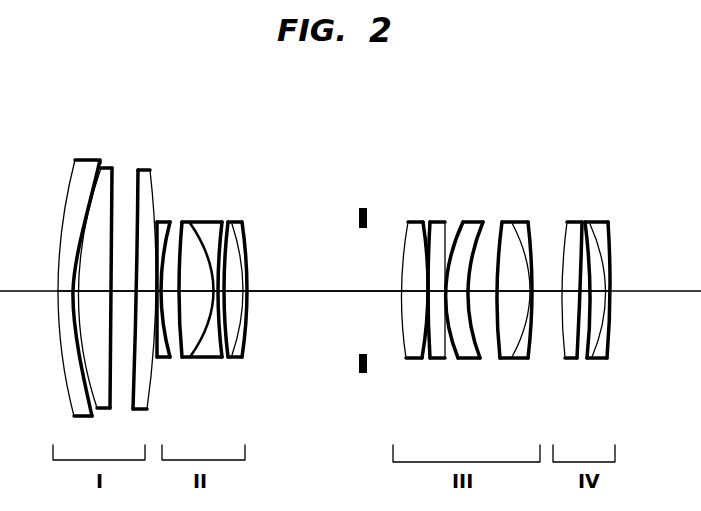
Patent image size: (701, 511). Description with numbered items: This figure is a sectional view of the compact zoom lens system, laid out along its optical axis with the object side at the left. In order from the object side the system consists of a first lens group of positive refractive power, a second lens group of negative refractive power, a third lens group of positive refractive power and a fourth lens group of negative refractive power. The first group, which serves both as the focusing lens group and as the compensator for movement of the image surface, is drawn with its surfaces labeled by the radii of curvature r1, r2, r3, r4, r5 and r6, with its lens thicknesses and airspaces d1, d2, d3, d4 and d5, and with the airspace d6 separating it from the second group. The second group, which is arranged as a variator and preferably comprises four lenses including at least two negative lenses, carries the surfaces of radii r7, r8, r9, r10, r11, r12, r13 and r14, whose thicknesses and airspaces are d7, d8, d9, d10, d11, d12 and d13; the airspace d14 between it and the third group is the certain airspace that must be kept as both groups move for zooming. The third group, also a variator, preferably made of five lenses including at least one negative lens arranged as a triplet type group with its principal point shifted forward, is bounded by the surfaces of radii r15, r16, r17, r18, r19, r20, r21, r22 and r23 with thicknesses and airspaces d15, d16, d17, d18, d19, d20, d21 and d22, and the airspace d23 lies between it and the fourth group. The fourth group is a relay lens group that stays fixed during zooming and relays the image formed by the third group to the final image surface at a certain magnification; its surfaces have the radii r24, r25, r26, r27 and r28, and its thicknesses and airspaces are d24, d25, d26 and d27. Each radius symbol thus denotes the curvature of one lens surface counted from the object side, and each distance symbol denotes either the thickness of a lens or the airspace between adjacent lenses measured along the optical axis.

The radius of curvature of first lens surface r1 is at (75, 172).
The radius of curvature of second lens surface r2 is at (96, 178).
The radius of curvature of third lens surface r3 is at (104, 176).
The radius of curvature of fourth lens surface r4 is at (113, 200).
The radius of curvature of fifth lens surface r5 is at (140, 195).
The radius of curvature of sixth lens surface r6 is at (156, 212).
The radius of curvature of seventh lens surface r7 is at (158, 230).
The radius of curvature of eighth lens surface r8 is at (172, 232).
The radius of curvature of ninth lens surface r9 is at (188, 236).
The radius of curvature of tenth lens surface r10 is at (212, 252).
The radius of curvature of eleventh lens surface r11 is at (222, 240).
The radius of curvature of twelfth lens surface r12 is at (228, 250).
The radius of curvature of thirteenth lens surface r13 is at (240, 262).
The radius of curvature of fourteenth lens surface r14 is at (247, 282).
The radius of curvature of fifteenth lens surface r15 is at (405, 238).
The radius of curvature of sixteenth lens surface r16 is at (423, 236).
The radius of curvature of seventeenth lens surface r17 is at (429, 225).
The radius of curvature of eighteenth lens surface r18 is at (447, 238).
The radius of curvature of nineteenth lens surface r19 is at (458, 242).
The radius of curvature of twentieth lens surface r20 is at (480, 242).
The radius of curvature of twenty-first lens surface r21 is at (500, 235).
The radius of curvature of twenty-second lens surface r22 is at (522, 258).
The radius of curvature of twenty-third lens surface r23 is at (532, 252).
The radius of curvature of twenty-fourth lens surface r24 is at (565, 242).
The radius of curvature of twenty-fifth lens surface r25 is at (582, 247).
The radius of curvature of twenty-sixth lens surface r26 is at (590, 252).
The radius of curvature of twenty-seventh lens surface r27 is at (602, 267).
The radius of curvature of twenty-eighth lens surface r28 is at (611, 291).
The first lens thickness or airspace d1 is at (67, 296).
The second lens thickness or airspace d2 is at (76, 298).
The third lens thickness or airspace d3 is at (98, 300).
The fourth lens thickness or airspace d4 is at (119, 297).
The fifth lens thickness or airspace d5 is at (136, 302).
The sixth lens thickness or airspace d6 is at (157, 305).
The seventh lens thickness or airspace d7 is at (162, 362).
The eighth lens thickness or airspace d8 is at (176, 302).
The ninth lens thickness or airspace d9 is at (195, 300).
The tenth lens thickness or airspace d10 is at (215, 300).
The eleventh lens thickness or airspace d11 is at (221, 300).
The twelfth lens thickness or airspace d12 is at (234, 300).
The thirteenth lens thickness or airspace d13 is at (245, 300).
The fourteenth lens thickness or airspace d14 is at (324, 310).
The fifteenth lens thickness or airspace d15 is at (410, 296).
The sixteenth lens thickness or airspace d16 is at (425, 298).
The seventeenth lens thickness or airspace d17 is at (432, 300).
The eighteenth lens thickness or airspace d18 is at (441, 300).
The nineteenth lens thickness or airspace d19 is at (456, 300).
The twentieth lens thickness or airspace d20 is at (475, 300).
The twenty-first lens thickness or airspace d21 is at (500, 300).
The twenty-second lens thickness or airspace d22 is at (522, 300).
The twenty-third lens thickness or airspace d23 is at (549, 300).
The twenty-fourth lens thickness or airspace d24 is at (570, 300).
The twenty-fifth lens thickness or airspace d25 is at (585, 300).
The twenty-sixth lens thickness or airspace d26 is at (599, 300).
The twenty-seventh lens thickness or airspace d27 is at (608, 300).